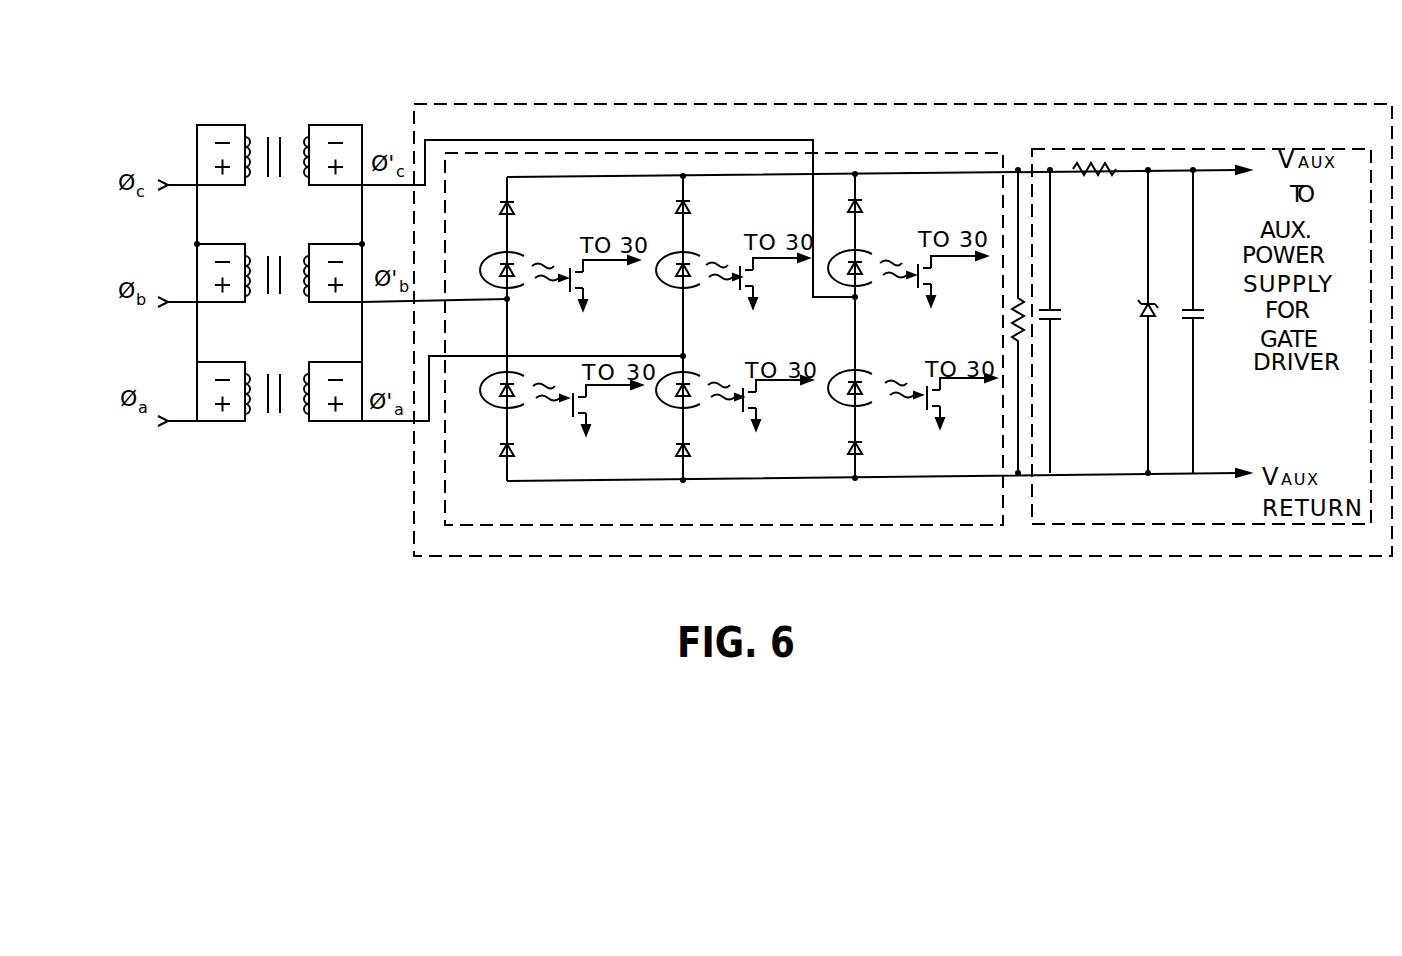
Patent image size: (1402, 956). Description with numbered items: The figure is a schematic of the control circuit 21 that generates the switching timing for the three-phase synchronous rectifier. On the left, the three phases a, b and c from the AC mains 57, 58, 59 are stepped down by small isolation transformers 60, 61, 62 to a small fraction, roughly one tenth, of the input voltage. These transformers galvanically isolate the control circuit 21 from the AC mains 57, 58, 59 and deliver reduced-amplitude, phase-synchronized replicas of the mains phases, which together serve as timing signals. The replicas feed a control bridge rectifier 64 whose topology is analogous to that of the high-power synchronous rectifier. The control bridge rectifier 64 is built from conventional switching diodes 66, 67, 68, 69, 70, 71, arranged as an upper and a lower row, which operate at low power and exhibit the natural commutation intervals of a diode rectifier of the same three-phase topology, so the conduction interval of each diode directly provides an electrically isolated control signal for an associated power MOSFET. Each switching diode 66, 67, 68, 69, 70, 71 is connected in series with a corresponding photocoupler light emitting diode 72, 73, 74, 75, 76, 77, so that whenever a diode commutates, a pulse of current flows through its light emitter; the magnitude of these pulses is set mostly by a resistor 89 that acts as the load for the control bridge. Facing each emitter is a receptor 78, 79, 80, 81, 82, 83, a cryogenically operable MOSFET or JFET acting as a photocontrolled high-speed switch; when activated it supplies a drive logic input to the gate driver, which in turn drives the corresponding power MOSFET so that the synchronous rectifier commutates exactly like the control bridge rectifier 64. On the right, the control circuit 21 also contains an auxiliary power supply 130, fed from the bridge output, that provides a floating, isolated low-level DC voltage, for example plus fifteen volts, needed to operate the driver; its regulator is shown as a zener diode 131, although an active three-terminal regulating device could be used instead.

The control circuit 21 is at (845, 122).
The AC mains (phase a) 57 is at (228, 424).
The AC mains (phase b) 58 is at (182, 306).
The AC mains (phase c) 59 is at (185, 190).
The isolation transformer 60 is at (309, 362).
The isolation transformer 61 is at (310, 244).
The isolation transformer 62 is at (318, 125).
The control bridge rectifier 64 is at (950, 192).
The switching diode 66 is at (514, 210).
The switching diode 67 is at (690, 208).
The switching diode 68 is at (862, 207).
The switching diode 69 is at (504, 460).
The switching diode 70 is at (676, 452).
The switching diode 71 is at (848, 450).
The photocoupler light emitting diode 72 is at (500, 262).
The photocoupler light emitting diode 73 is at (698, 284).
The photocoupler light emitting diode 74 is at (866, 282).
The photocoupler light emitting diode 75 is at (503, 402).
The photocoupler light emitting diode 76 is at (670, 400).
The photocoupler light emitting diode 77 is at (838, 398).
The photocoupler receptor 78 is at (598, 303).
The photocoupler receptor 79 is at (755, 300).
The photocoupler receptor 80 is at (936, 306).
The photocoupler receptor 81 is at (584, 430).
The photocoupler receptor 82 is at (754, 432).
The photocoupler receptor 83 is at (934, 426).
The resistor 89 is at (1010, 322).
The auxiliary power supply 130 is at (1178, 160).
The zener diode 131 is at (1140, 324).